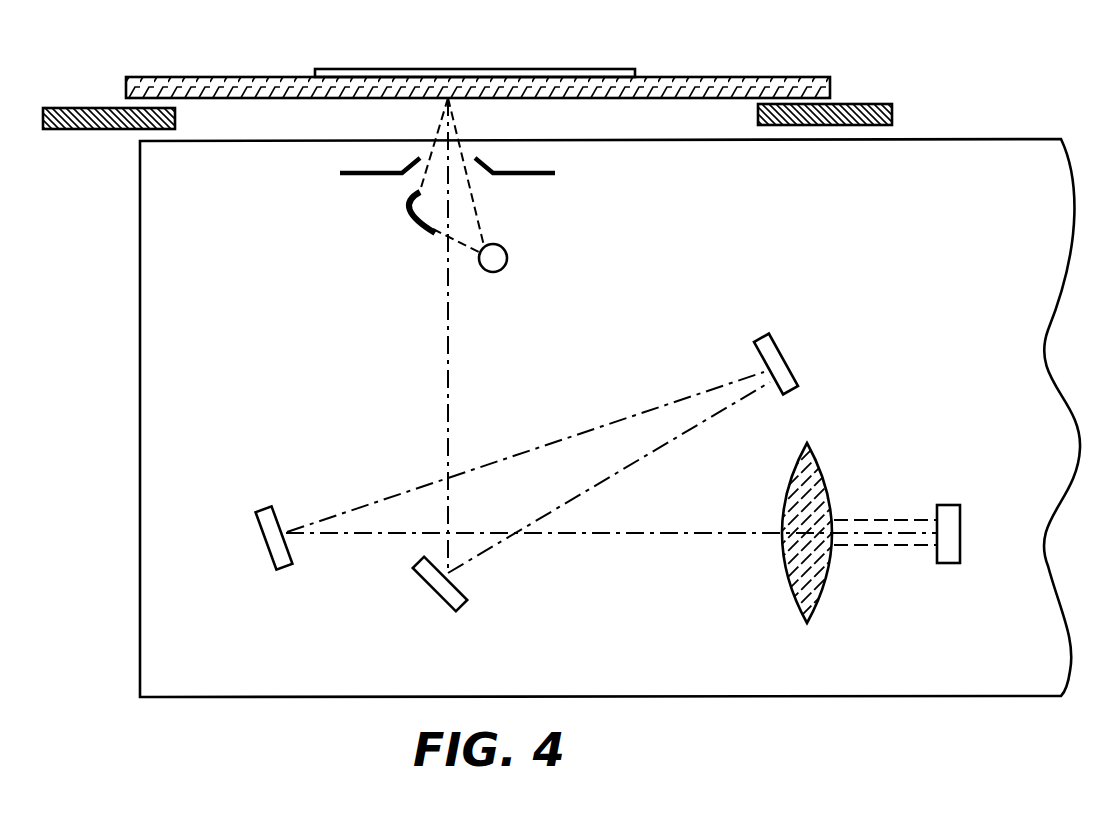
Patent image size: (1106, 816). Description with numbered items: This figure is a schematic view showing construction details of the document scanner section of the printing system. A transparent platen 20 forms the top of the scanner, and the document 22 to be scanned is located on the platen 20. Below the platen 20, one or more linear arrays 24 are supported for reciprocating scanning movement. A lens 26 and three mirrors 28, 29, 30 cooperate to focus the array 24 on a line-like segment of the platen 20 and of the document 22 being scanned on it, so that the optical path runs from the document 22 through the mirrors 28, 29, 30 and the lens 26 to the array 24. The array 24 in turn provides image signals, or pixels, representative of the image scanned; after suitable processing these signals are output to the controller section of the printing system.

The transparent platen 20 is at (238, 99).
The document 22 is at (533, 70).
The linear array 24 is at (950, 504).
The lens 26 is at (822, 593).
The mirror 28 is at (438, 600).
The mirror 29 is at (786, 358).
The mirror 30 is at (267, 553).